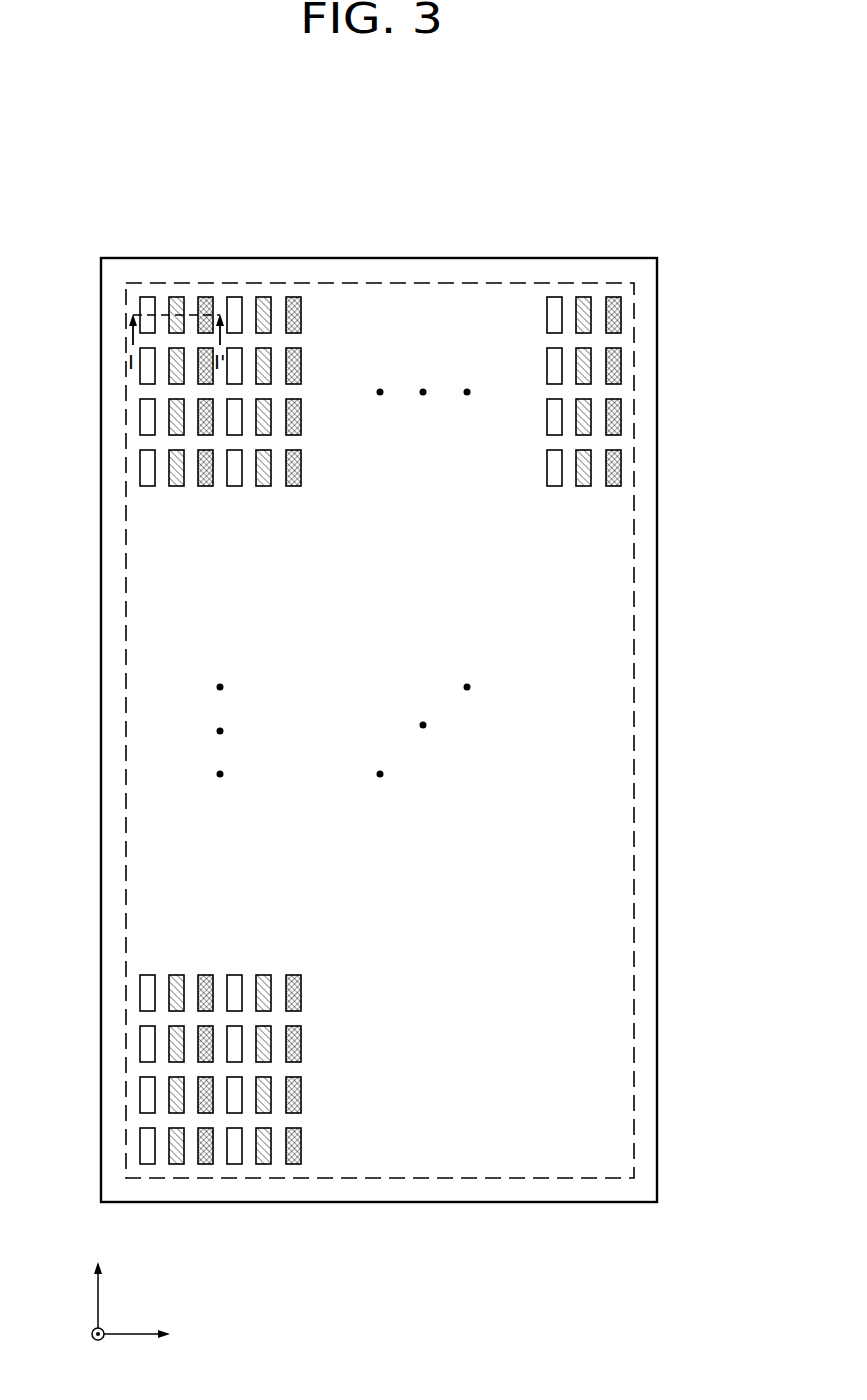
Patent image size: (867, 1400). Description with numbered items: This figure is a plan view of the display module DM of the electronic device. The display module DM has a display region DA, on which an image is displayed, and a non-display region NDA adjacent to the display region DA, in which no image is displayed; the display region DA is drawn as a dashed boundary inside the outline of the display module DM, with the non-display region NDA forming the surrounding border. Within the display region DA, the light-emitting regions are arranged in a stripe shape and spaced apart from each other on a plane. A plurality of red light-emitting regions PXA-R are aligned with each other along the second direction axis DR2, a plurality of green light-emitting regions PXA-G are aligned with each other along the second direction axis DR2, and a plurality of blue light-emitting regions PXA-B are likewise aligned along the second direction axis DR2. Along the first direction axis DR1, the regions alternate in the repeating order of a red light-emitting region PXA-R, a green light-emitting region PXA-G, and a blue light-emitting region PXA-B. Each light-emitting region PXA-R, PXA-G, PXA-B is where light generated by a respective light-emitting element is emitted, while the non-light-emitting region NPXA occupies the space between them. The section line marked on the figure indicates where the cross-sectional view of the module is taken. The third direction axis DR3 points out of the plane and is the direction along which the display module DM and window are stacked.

The display module DM is at (597, 191).
The display region DA is at (635, 600).
The non-display region NDA is at (647, 644).
The red light-emitting region PXA-R is at (150, 296).
The green light-emitting region PXA-G is at (175, 296).
The blue light-emitting region PXA-B is at (205, 296).
The non-light-emitting region NPXA is at (424, 306).
The first direction axis DR1 is at (158, 1335).
The second direction axis DR2 is at (98, 1281).
The third direction axis DR3 is at (98, 1350).